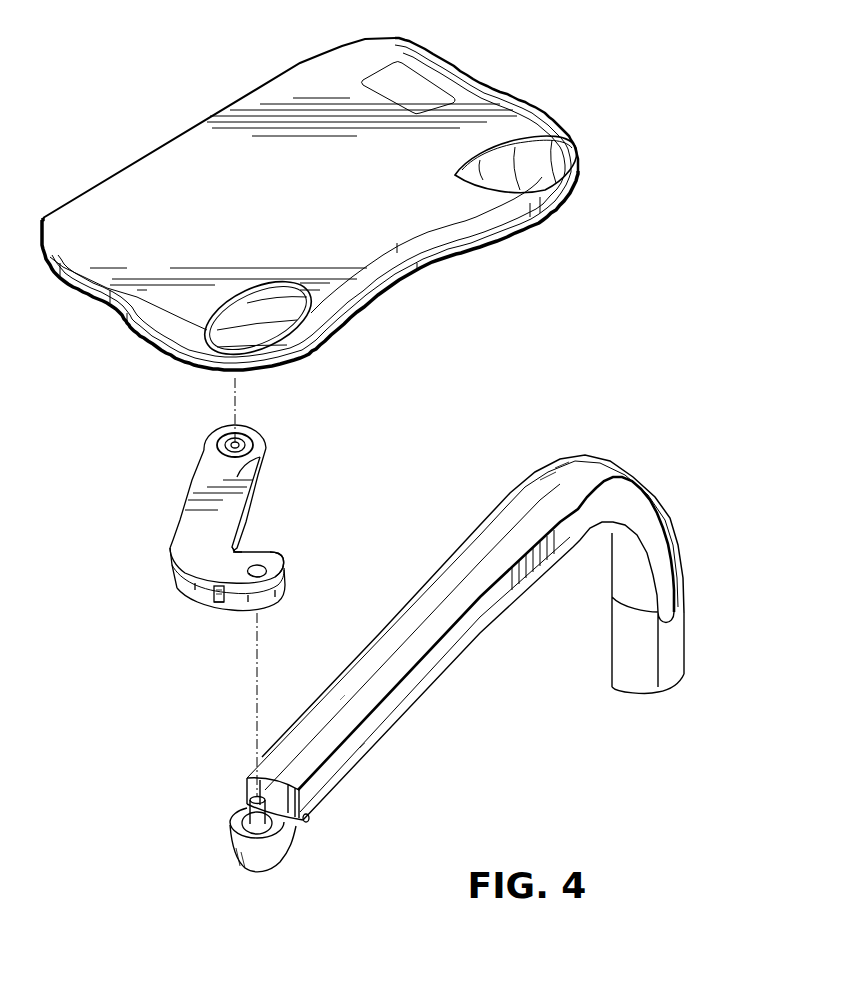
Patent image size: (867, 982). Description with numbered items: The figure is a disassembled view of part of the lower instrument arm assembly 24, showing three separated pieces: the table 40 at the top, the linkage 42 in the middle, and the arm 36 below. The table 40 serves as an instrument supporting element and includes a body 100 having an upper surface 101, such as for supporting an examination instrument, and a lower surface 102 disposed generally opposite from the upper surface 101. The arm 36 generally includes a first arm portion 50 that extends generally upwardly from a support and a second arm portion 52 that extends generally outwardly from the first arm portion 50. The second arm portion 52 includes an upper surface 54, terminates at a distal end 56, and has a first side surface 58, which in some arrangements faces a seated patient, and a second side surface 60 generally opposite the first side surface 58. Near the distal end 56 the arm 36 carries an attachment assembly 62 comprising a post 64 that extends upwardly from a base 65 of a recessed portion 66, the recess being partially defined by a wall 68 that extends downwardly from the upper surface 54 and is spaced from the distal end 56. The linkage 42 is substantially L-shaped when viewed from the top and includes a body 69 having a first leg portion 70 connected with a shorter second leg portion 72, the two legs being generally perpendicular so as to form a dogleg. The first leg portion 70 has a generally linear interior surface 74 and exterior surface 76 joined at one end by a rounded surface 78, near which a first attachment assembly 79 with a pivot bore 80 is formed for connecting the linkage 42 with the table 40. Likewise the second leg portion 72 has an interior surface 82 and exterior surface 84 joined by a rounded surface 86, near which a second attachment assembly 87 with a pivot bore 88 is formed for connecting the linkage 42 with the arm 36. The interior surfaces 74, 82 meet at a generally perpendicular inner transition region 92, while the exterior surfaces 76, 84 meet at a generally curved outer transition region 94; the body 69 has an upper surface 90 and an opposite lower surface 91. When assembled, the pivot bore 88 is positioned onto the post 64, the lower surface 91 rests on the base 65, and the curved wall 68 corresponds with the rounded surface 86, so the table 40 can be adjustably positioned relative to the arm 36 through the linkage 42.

The lower instrument arm assembly 24 is at (633, 112).
The table 40 is at (310, 204).
The body 100 is at (109, 183).
The upper surface 101 is at (277, 199).
The lower surface 102 is at (479, 250).
The linkage 42 is at (226, 517).
The body 69 is at (183, 514).
The first leg portion 70 is at (238, 476).
The second leg portion 72 is at (205, 575).
The interior surface 74 is at (256, 490).
The exterior surface 76 is at (194, 481).
The rounded surface 78 is at (252, 424).
The first attachment assembly 79 is at (260, 436).
The pivot bore 80 is at (236, 444).
The interior surface 82 is at (270, 554).
The exterior surface 84 is at (233, 603).
The rounded surface 86 is at (287, 589).
The second attachment assembly 87 is at (270, 571).
The pivot bore 88 is at (263, 577).
The upper surface 90 is at (190, 548).
The lower surface 91 is at (203, 606).
The inner transition region 92 is at (242, 547).
The outer transition region 94 is at (175, 578).
The arm 36 is at (462, 625).
The first arm portion 50 is at (667, 676).
The second arm portion 52 is at (521, 508).
The upper surface 54 is at (460, 583).
The first side surface 58 is at (314, 706).
The second side surface 60 is at (363, 748).
The recessed portion 66 is at (246, 792).
The wall 68 is at (281, 803).
The distal end 56 is at (238, 846).
The attachment assembly 62 is at (231, 827).
The post 64 is at (258, 825).
The base 65 is at (240, 817).